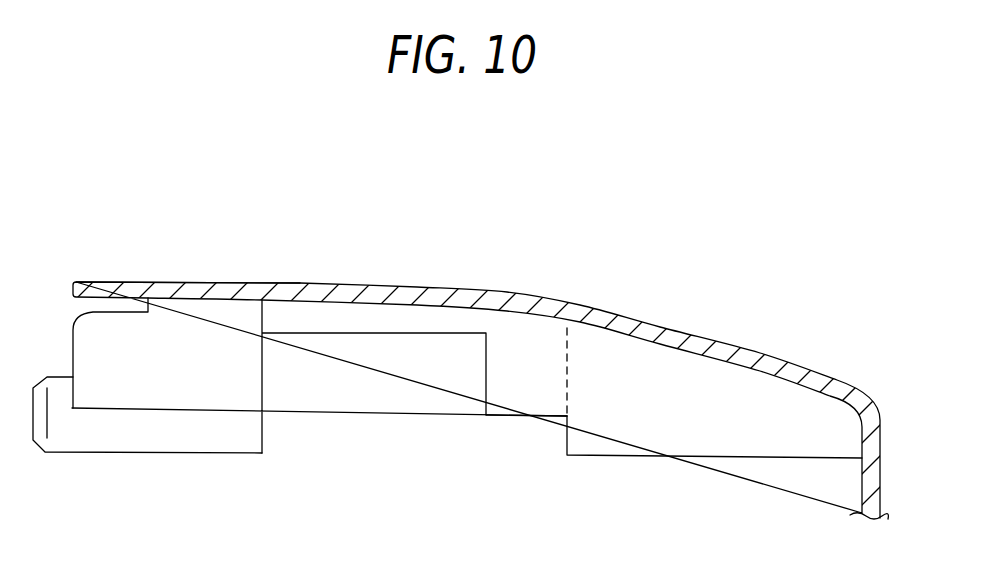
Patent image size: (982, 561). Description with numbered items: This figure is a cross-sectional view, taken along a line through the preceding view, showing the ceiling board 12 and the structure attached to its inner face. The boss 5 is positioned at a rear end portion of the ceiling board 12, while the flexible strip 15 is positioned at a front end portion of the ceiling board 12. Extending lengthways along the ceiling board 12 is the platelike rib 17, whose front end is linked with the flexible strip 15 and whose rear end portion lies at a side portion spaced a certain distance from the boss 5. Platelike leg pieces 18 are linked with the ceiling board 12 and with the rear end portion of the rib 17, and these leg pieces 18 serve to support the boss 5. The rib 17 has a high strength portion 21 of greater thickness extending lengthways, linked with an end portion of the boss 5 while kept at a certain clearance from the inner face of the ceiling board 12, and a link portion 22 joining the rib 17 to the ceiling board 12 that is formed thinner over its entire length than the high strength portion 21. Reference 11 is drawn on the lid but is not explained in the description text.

The boss 5 is at (160, 453).
The lid 11 is at (506, 294).
The ceiling board 12 is at (320, 288).
The flexible strip 15 is at (697, 458).
The rib 17 is at (517, 417).
The leg pieces 18 is at (118, 327).
The high strength portion 21 is at (357, 402).
The link portion 22 is at (430, 313).